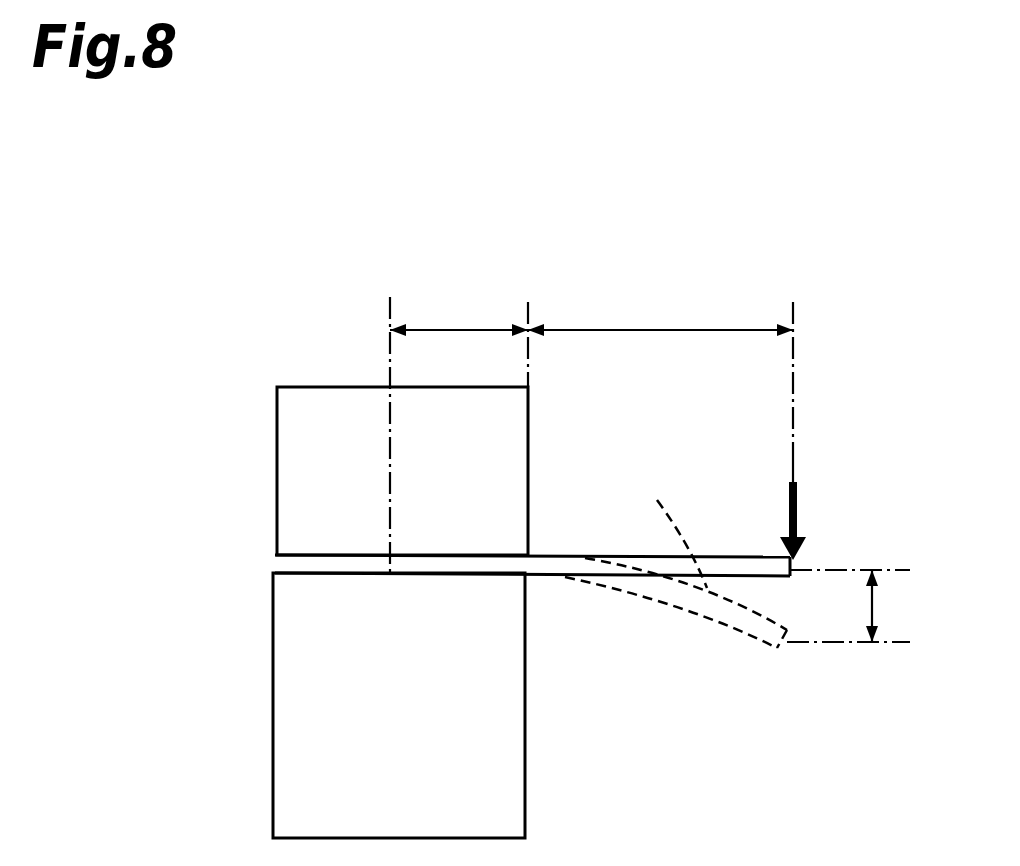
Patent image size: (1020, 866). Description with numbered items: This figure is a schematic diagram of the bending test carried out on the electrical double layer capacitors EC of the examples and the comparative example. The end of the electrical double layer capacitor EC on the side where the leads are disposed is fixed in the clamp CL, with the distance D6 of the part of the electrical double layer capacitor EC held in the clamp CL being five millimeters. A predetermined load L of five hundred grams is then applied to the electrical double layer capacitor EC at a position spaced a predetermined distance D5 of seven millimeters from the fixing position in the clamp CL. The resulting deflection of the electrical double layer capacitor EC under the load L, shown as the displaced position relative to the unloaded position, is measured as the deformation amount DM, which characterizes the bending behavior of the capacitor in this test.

The clamp CL is at (277, 468).
The distance of the part fixed in the clamp D6 is at (455, 329).
The predetermined distance D5 is at (667, 329).
The predetermined load L is at (800, 510).
The electrical double layer capacitor EC is at (713, 557).
The deformation amount DM is at (864, 606).